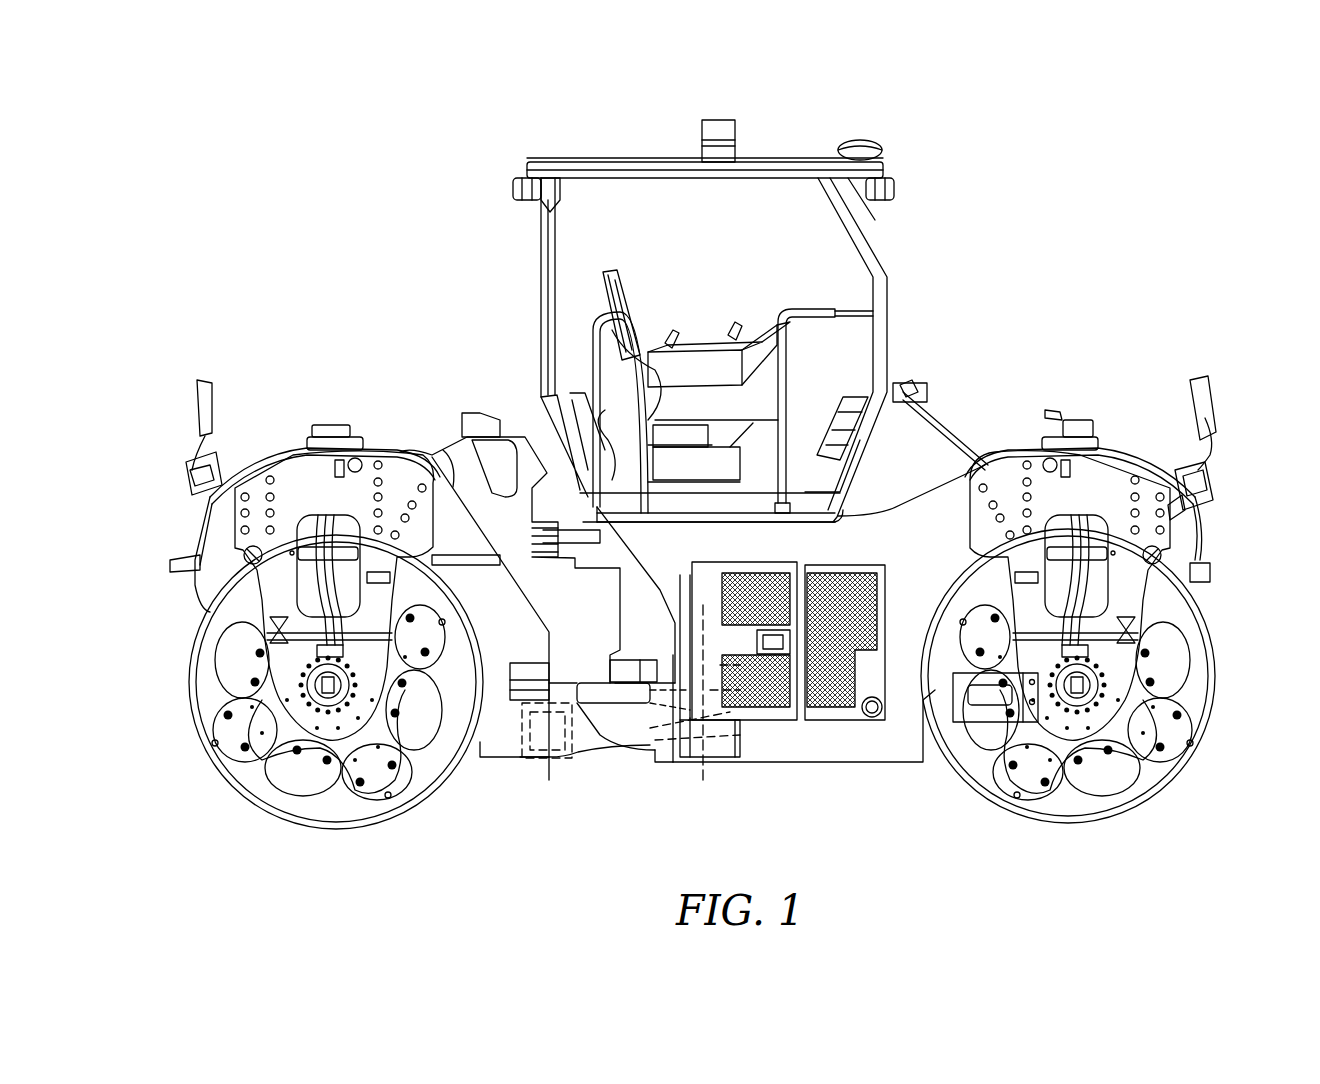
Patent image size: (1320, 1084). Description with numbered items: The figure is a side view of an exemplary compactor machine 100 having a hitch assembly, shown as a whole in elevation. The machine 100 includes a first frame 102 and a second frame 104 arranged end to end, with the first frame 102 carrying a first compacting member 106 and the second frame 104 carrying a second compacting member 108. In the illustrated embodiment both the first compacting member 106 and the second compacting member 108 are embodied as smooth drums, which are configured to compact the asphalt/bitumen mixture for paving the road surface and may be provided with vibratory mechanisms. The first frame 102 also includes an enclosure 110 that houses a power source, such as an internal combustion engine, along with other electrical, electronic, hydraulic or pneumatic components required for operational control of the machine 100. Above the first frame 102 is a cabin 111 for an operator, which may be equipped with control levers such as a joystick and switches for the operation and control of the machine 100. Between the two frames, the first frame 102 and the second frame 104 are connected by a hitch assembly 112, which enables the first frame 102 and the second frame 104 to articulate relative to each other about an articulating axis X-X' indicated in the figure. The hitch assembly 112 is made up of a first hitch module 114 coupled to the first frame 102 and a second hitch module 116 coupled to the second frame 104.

The machine 100 is at (312, 128).
The first frame 102 is at (976, 373).
The second frame 104 is at (259, 377).
The first compacting member 106 is at (1200, 693).
The second compacting member 108 is at (255, 778).
The enclosure 110 is at (822, 710).
The cabin 111 is at (866, 243).
The hitch assembly 112 is at (648, 758).
The first hitch module 114 is at (683, 752).
The second hitch module 116 is at (553, 760).